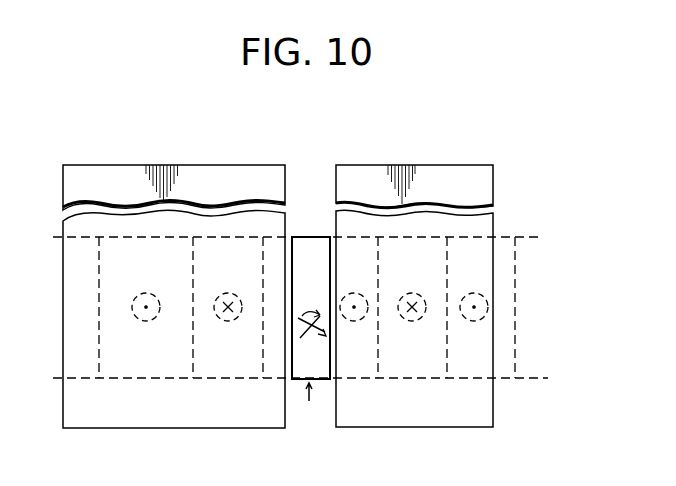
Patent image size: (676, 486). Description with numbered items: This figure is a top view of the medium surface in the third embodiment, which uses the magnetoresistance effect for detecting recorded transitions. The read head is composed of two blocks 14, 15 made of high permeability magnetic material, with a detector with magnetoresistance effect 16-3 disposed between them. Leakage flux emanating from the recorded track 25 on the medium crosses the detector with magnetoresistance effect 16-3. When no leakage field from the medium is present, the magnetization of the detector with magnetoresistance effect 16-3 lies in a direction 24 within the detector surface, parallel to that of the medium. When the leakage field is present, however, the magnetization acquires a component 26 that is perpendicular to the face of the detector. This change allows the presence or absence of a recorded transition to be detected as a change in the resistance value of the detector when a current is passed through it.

The block 14 is at (191, 178).
The block 15 is at (428, 178).
The detector with magnetoresistance effect 16-3 is at (313, 236).
The direction 24 is at (308, 408).
The recorded track 25 is at (532, 327).
The component 26 is at (309, 326).